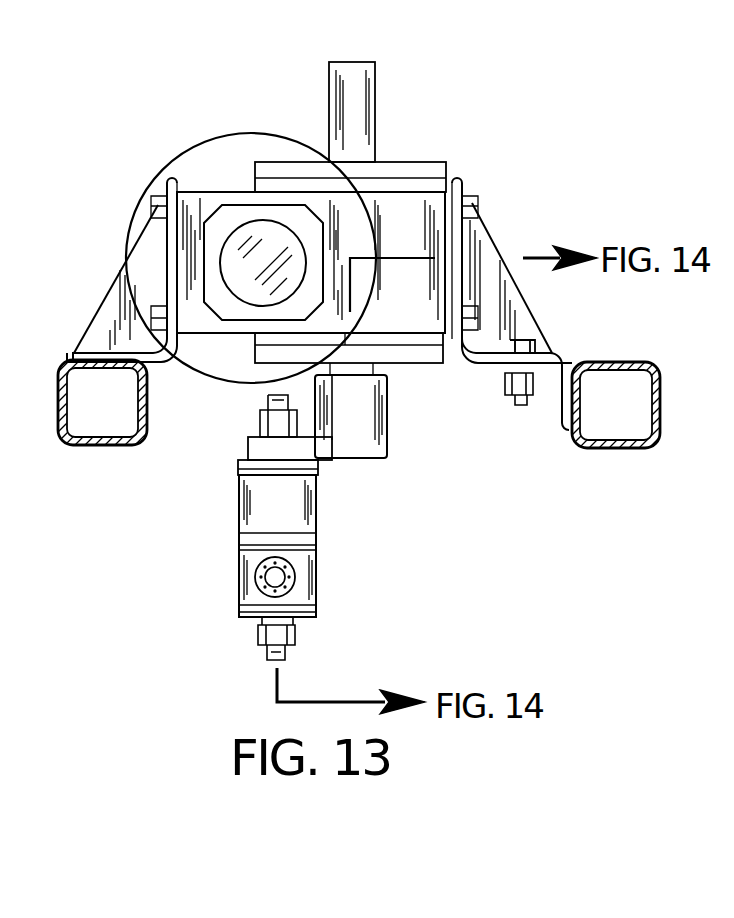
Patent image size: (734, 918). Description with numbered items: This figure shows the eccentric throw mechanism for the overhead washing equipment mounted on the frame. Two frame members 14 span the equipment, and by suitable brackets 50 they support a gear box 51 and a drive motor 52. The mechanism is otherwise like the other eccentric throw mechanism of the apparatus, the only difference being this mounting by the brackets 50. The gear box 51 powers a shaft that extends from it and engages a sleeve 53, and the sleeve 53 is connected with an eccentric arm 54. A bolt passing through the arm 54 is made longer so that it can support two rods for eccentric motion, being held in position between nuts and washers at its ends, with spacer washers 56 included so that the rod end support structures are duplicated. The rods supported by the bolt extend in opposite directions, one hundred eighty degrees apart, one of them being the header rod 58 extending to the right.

The frame member 14 is at (112, 447).
The bracket 50 is at (498, 242).
The gear box 51 is at (415, 217).
The drive motor 52 is at (210, 138).
The sleeve 53 is at (388, 427).
The eccentric arm 54 is at (315, 453).
The spacer washers 56 is at (240, 457).
The header rod 58 is at (295, 582).